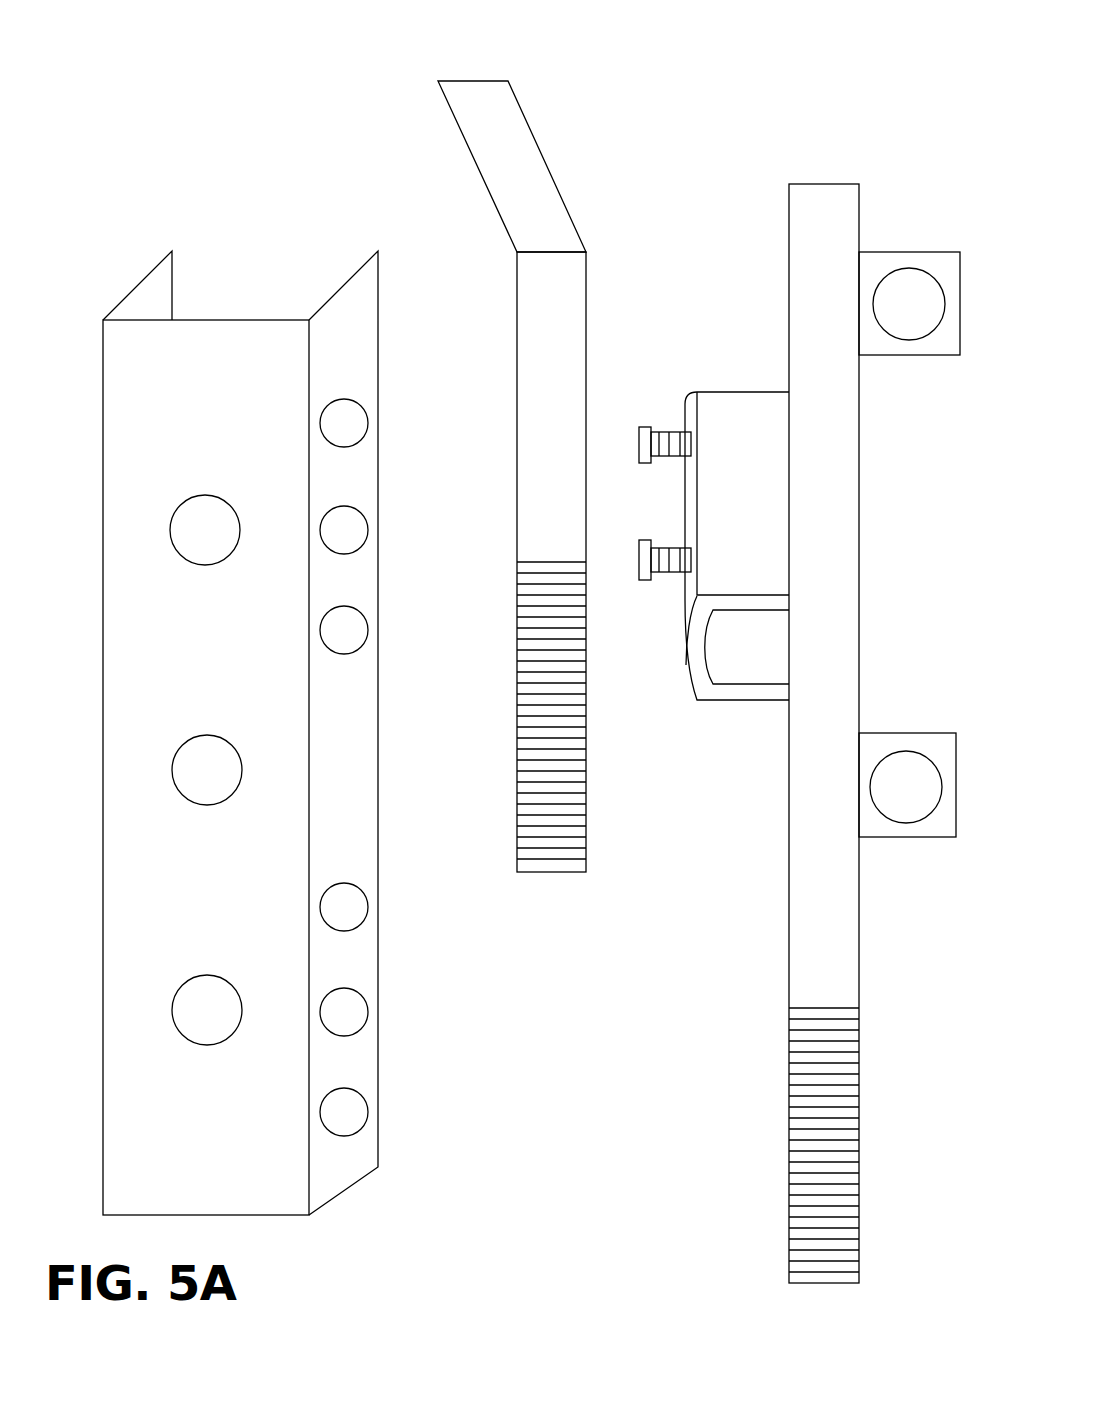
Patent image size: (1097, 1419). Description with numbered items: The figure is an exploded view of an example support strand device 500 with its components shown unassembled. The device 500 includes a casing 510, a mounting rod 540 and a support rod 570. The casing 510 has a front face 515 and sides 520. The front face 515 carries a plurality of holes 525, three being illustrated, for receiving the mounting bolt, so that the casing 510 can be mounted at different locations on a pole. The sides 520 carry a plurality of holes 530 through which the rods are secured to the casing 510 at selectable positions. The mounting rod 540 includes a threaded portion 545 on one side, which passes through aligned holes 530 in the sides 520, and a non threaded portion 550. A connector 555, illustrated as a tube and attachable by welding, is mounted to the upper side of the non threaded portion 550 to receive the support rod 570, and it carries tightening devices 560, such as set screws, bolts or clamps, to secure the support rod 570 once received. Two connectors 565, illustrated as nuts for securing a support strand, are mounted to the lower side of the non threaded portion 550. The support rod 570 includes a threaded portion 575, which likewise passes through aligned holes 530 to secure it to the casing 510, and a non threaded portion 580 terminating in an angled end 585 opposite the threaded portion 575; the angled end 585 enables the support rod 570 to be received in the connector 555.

The support strand device 500 is at (166, 122).
The casing 510 is at (238, 280).
The front face 515 is at (127, 543).
The sides 520 is at (124, 288).
The holes 525 is at (204, 510).
The holes 530 is at (350, 422).
The mounting rod 540 is at (747, 212).
The threaded portion 545 is at (859, 1093).
The non threaded portion 550 is at (789, 920).
The connector 555 is at (712, 701).
The tightening devices 560 is at (644, 427).
The connectors 565 is at (910, 252).
The support rod 570 is at (424, 118).
The threaded portion 575 is at (587, 815).
The non threaded portion 580 is at (518, 347).
The angled end 585 is at (555, 184).